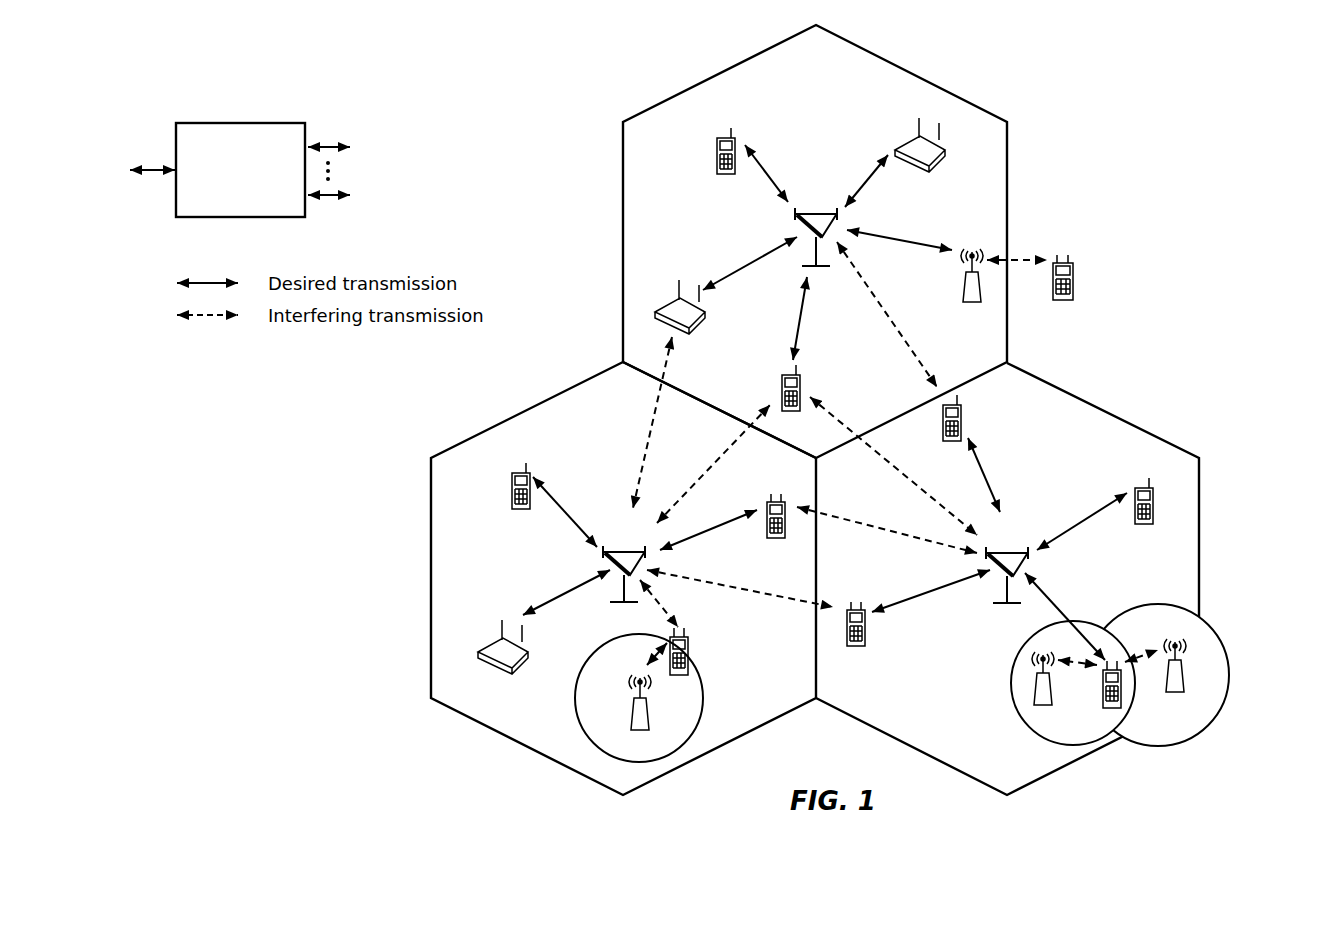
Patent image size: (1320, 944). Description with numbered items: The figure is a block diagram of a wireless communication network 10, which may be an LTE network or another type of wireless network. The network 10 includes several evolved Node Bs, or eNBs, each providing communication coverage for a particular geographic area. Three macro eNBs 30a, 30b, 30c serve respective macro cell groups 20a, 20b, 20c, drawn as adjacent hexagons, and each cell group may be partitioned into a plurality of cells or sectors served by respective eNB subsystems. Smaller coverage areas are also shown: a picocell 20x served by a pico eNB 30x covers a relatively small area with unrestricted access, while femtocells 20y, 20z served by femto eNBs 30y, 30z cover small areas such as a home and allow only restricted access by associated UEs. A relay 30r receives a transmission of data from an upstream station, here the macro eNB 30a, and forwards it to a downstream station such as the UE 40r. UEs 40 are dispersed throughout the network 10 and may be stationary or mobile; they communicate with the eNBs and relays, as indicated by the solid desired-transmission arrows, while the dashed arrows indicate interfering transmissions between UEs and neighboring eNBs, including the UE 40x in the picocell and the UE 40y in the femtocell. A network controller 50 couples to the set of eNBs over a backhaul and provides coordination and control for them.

The wireless communication network 10 is at (1137, 88).
The macro cell group 20a is at (912, 74).
The macro cell group 20b is at (528, 409).
The macro cell group 20c is at (1106, 412).
The pico cell 20x is at (599, 649).
The femto cell 20y is at (1017, 658).
The femto cell 20z is at (1152, 604).
The macro eNB 30a is at (815, 213).
The macro eNB 30b is at (622, 551).
The macro eNB 30c is at (1008, 550).
The relay 30r is at (960, 295).
The pico eNB 30x is at (648, 720).
The femto eNB 30y is at (1050, 695).
The femto eNB 30z is at (1183, 685).
The user equipment (UE) 40 is at (717, 148).
The UE served by relay 40r is at (1074, 290).
The UE in pico cell 40x is at (690, 649).
The UE in femto cell 40y is at (1101, 699).
The network controller 50 is at (238, 121).